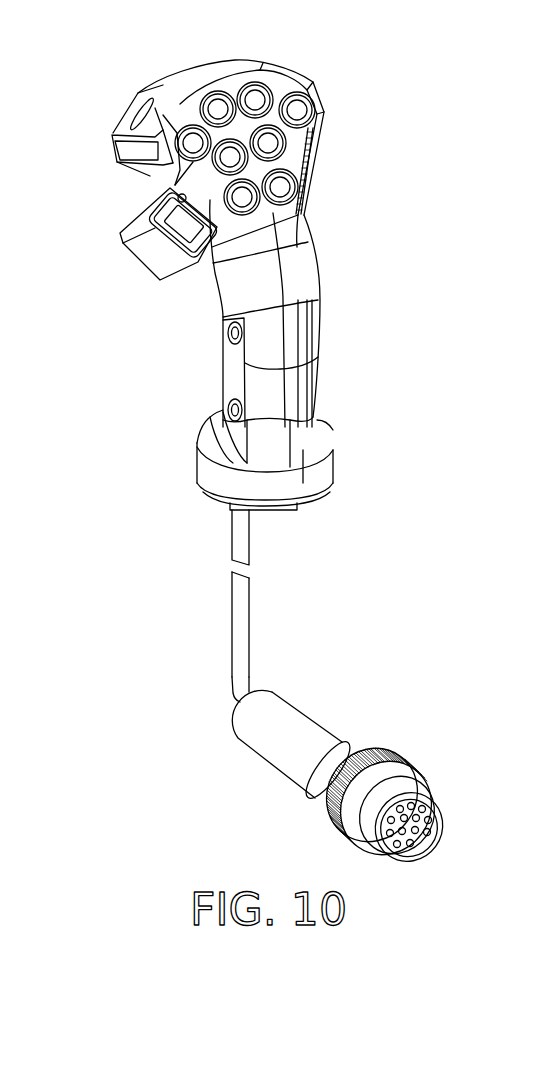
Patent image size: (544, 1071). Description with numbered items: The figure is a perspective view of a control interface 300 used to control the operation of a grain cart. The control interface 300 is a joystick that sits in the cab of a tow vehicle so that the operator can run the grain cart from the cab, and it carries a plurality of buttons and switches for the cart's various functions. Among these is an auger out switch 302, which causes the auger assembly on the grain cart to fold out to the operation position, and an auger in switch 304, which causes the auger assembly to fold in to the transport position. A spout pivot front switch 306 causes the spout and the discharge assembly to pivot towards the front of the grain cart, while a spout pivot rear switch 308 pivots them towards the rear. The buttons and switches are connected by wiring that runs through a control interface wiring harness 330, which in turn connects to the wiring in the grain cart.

The control interface 300 is at (400, 103).
The auger out switch 302 is at (185, 125).
The auger in switch 304 is at (217, 108).
The spout pivot front switch 306 is at (150, 176).
The spout pivot rear switch 308 is at (268, 143).
The control interface wiring harness 330 is at (249, 610).